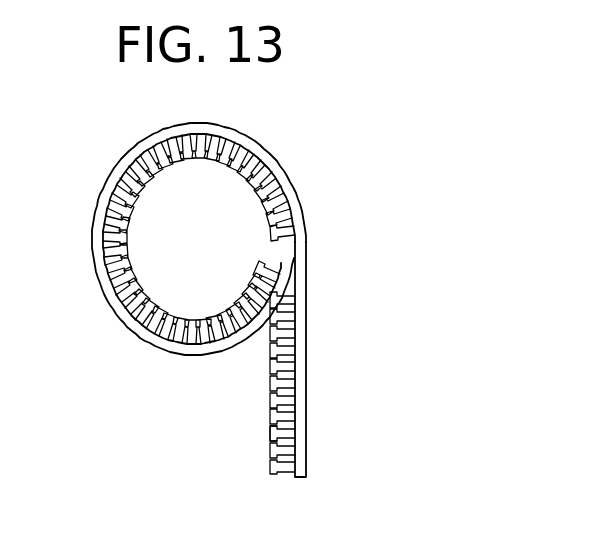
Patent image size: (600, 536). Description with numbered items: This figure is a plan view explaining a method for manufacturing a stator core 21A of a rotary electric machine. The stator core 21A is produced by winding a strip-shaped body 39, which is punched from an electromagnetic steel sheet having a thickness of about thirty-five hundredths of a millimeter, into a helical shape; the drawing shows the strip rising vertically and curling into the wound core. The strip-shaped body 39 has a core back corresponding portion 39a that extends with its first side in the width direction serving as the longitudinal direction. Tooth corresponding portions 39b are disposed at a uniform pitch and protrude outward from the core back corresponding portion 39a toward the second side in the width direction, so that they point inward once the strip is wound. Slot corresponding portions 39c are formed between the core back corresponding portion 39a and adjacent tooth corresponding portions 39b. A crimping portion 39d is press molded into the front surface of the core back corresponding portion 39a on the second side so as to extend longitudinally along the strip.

The stator core 21A is at (234, 236).
The strip-shaped body 39 is at (300, 359).
The core back corresponding portion 39a is at (299, 432).
The tooth corresponding portions 39b is at (270, 397).
The slot corresponding portions 39c is at (270, 440).
The crimping portion 39d is at (292, 198).